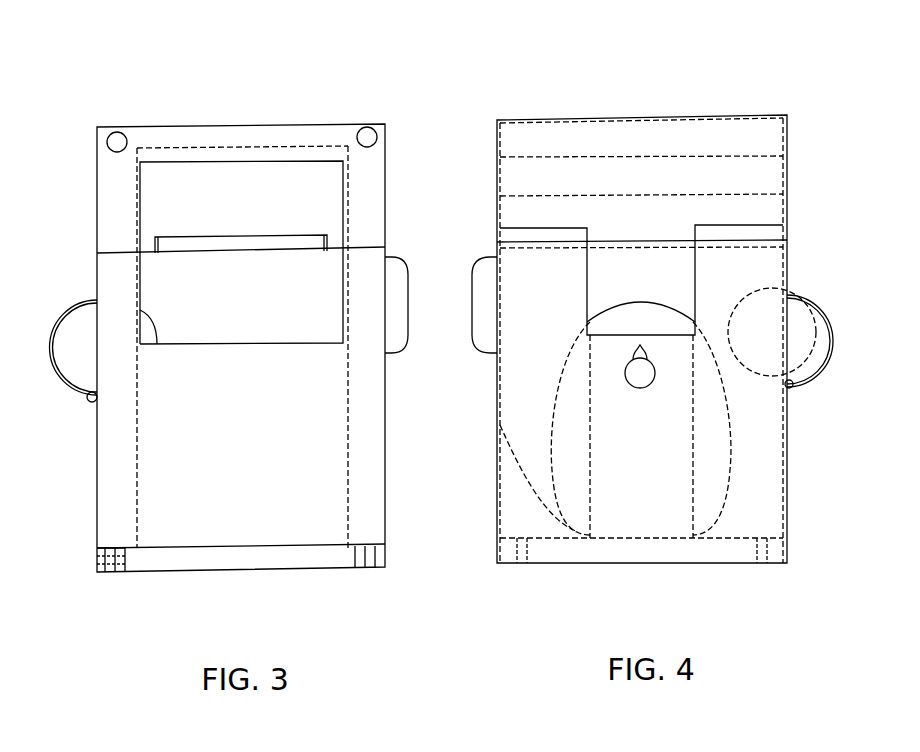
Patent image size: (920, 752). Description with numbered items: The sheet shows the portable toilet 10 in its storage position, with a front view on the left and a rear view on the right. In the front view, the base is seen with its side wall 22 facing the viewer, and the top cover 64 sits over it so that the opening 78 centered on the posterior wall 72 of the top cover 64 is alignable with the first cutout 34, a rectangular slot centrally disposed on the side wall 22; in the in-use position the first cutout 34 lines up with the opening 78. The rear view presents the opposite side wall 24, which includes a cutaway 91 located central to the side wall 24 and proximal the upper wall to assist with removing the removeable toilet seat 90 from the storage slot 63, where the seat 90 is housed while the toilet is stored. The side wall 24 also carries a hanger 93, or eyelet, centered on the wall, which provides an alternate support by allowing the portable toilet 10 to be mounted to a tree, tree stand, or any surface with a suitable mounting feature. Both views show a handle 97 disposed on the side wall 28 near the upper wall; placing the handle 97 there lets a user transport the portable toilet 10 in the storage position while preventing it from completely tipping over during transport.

In FIG. 3, the portable toilet 10 is at (86, 110).
In FIG. 4, the portable toilet 10 is at (812, 98).
In FIG. 3, the side wall 22 is at (120, 493).
In FIG. 4, the side wall 24 is at (522, 512).
In FIG. 3, the side wall 28 is at (385, 477).
In FIG. 3, the first cutout 34 is at (290, 343).
In FIG. 4, the storage slot 63 is at (663, 318).
In FIG. 3, the top cover 64 is at (495, 122).
In FIG. 3, the posterior wall 72 is at (118, 212).
In FIG. 3, the opening 78 is at (343, 182).
In FIG. 4, the removeable toilet seat 90 is at (597, 256).
In FIG. 4, the cutaway 91 is at (697, 265).
In FIG. 4, the hanger 93 is at (646, 357).
In FIG. 3, the handle 97 is at (472, 305).
In FIG. 4, the handle 97 is at (484, 305).